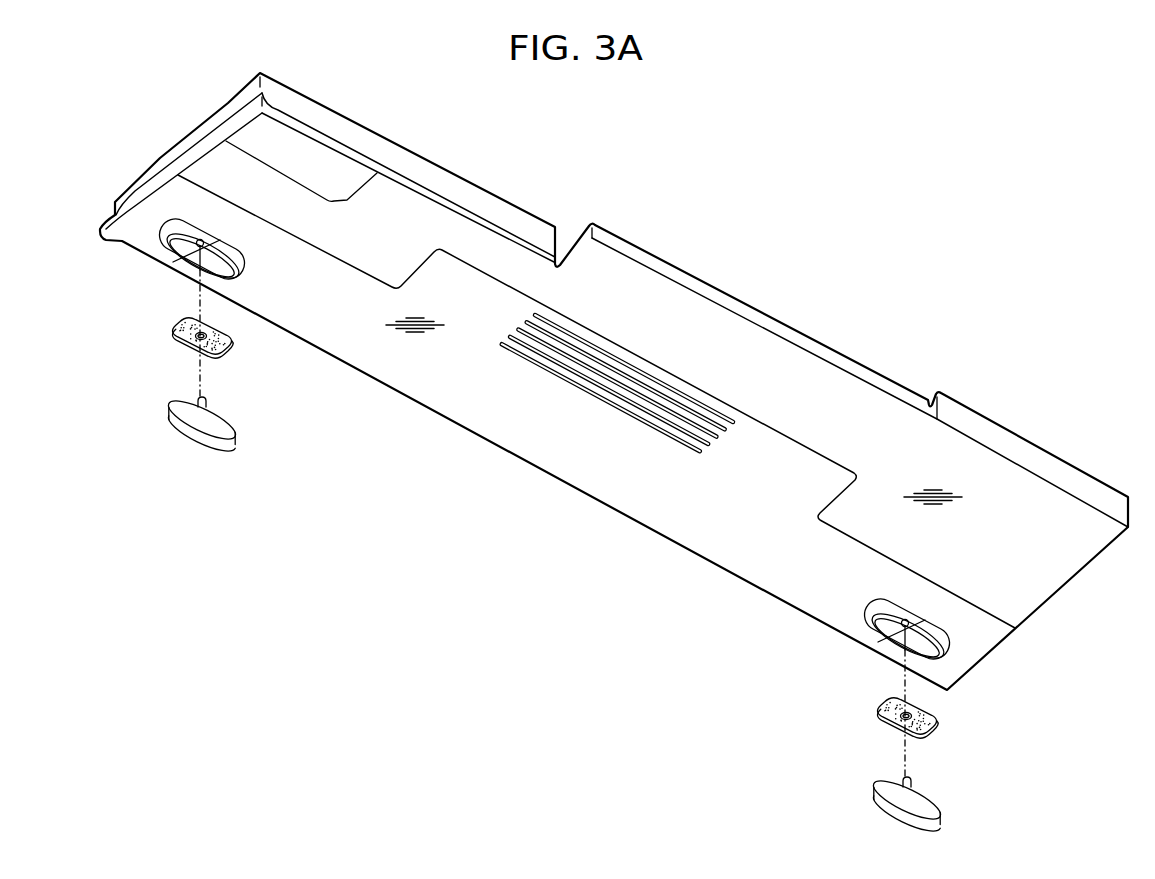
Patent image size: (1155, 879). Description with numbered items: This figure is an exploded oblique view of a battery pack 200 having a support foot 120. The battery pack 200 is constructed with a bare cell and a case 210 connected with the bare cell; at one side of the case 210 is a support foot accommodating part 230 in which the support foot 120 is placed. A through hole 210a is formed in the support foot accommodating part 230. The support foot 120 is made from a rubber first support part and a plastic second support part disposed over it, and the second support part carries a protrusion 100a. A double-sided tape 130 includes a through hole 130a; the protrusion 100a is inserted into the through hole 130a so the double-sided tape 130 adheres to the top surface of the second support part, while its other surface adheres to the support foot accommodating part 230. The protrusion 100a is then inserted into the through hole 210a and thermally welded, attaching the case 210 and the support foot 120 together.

The battery pack 200 is at (852, 262).
The case 210 is at (487, 420).
The through hole 210a is at (185, 264).
The support foot accommodating part 230 is at (247, 248).
The double-sided tape 130 is at (217, 358).
The through hole 130a is at (178, 340).
The protrusion 100a is at (198, 398).
The support foot 120 is at (225, 450).